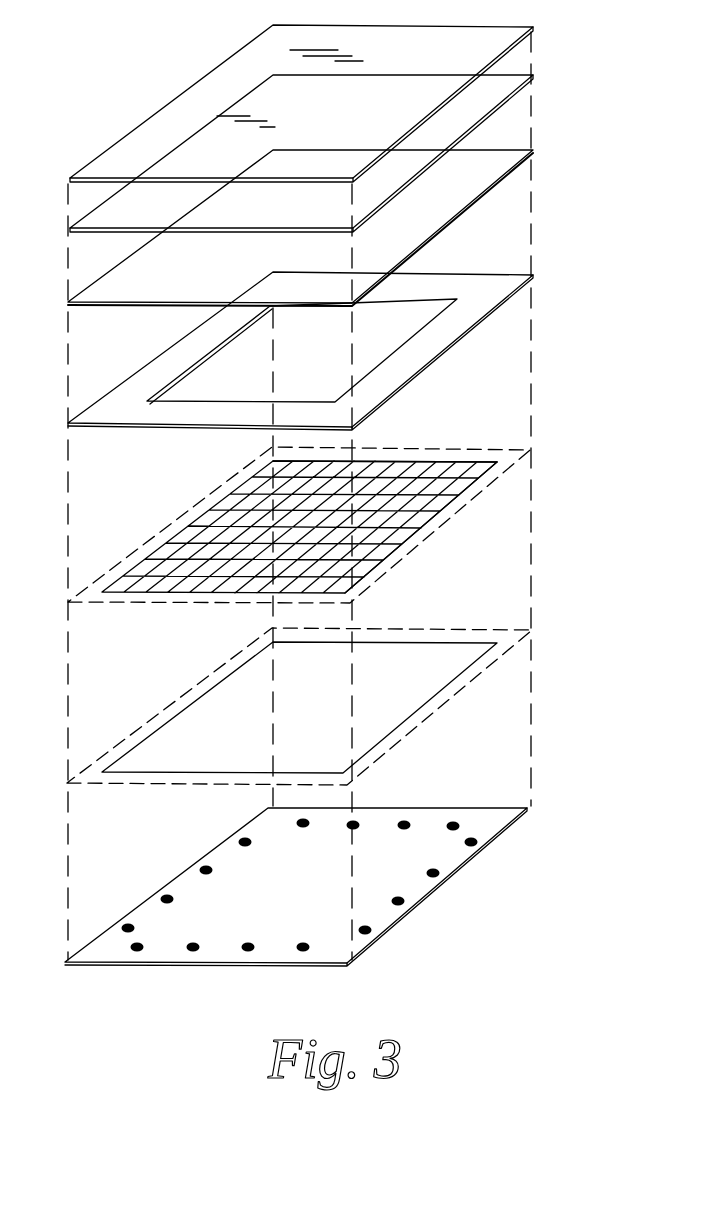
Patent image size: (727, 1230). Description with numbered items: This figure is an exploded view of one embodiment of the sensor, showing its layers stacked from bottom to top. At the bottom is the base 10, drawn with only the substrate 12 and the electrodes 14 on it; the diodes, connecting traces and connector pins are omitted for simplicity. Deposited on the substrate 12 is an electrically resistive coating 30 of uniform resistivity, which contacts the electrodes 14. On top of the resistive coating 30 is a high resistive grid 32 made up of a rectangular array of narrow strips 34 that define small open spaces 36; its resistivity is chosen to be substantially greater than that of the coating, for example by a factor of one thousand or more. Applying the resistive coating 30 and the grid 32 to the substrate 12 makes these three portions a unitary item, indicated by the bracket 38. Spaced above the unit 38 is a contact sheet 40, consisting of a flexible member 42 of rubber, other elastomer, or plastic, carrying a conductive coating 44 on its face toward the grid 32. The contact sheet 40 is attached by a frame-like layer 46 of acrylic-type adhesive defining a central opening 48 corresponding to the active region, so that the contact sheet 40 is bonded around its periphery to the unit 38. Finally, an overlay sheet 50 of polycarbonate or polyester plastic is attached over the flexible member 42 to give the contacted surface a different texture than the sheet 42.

The base 10 is at (331, 887).
The substrate 12 is at (457, 875).
The electrodes 14 is at (398, 901).
The resistive coating 30 is at (314, 706).
The high resistive grid 32 is at (475, 493).
The narrow strips 34 is at (452, 477).
The open spaces 36 is at (445, 502).
The unit 38 is at (356, 626).
The contact sheet 40 is at (618, 63).
The flexible member 42 is at (510, 100).
The conductive coating 44 is at (487, 193).
The frame-like layer 46 is at (307, 351).
The central opening 48 is at (190, 365).
The overlay sheet 50 is at (205, 74).